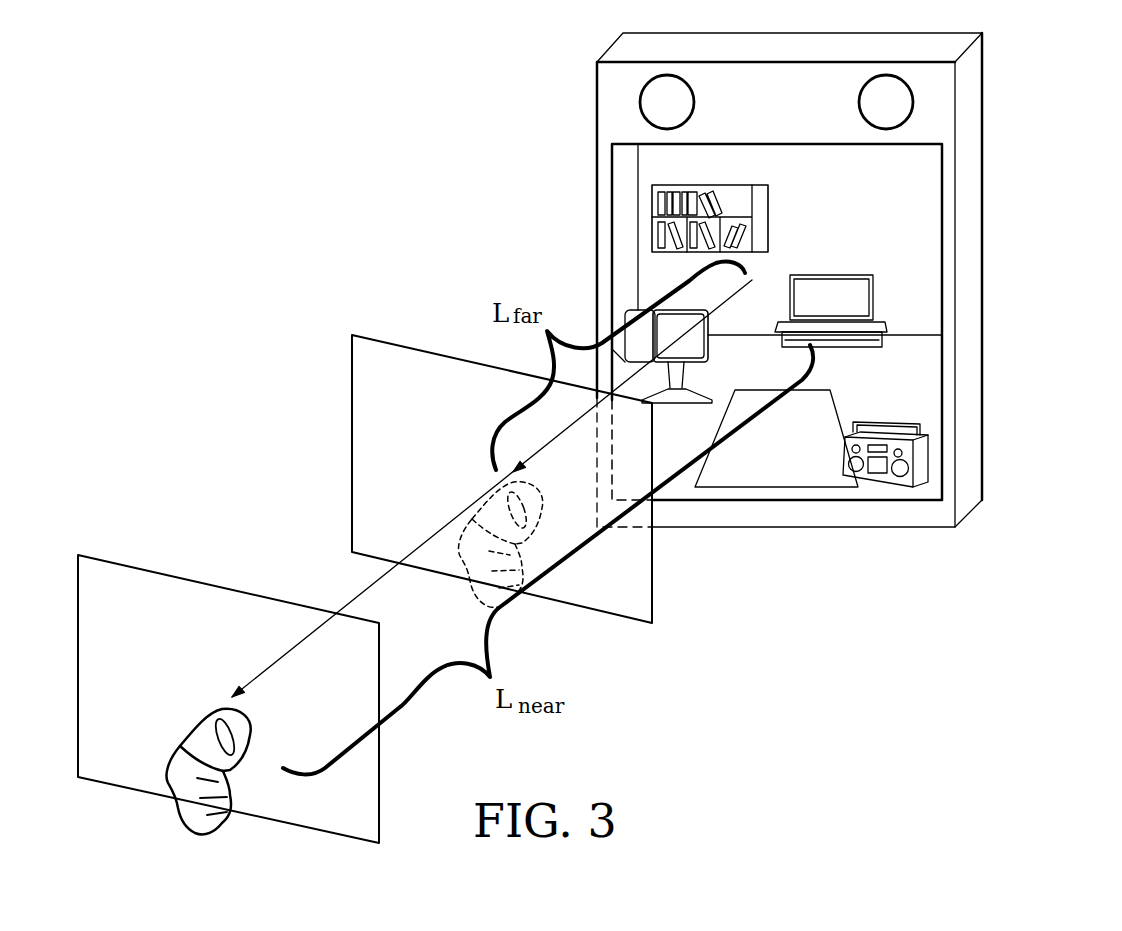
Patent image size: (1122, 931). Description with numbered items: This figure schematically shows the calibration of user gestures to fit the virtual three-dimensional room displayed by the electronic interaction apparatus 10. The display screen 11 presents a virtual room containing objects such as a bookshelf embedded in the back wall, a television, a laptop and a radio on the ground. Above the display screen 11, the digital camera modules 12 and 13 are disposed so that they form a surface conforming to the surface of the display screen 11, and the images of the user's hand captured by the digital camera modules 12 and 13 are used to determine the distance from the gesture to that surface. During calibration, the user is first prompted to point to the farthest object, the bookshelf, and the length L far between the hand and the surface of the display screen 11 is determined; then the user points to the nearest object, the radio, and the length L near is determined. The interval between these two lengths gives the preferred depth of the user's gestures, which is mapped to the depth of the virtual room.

The electronic interaction apparatus 10 is at (968, 357).
The display screen 11 is at (943, 238).
The digital camera module 12 is at (660, 103).
The digital camera module 13 is at (903, 105).